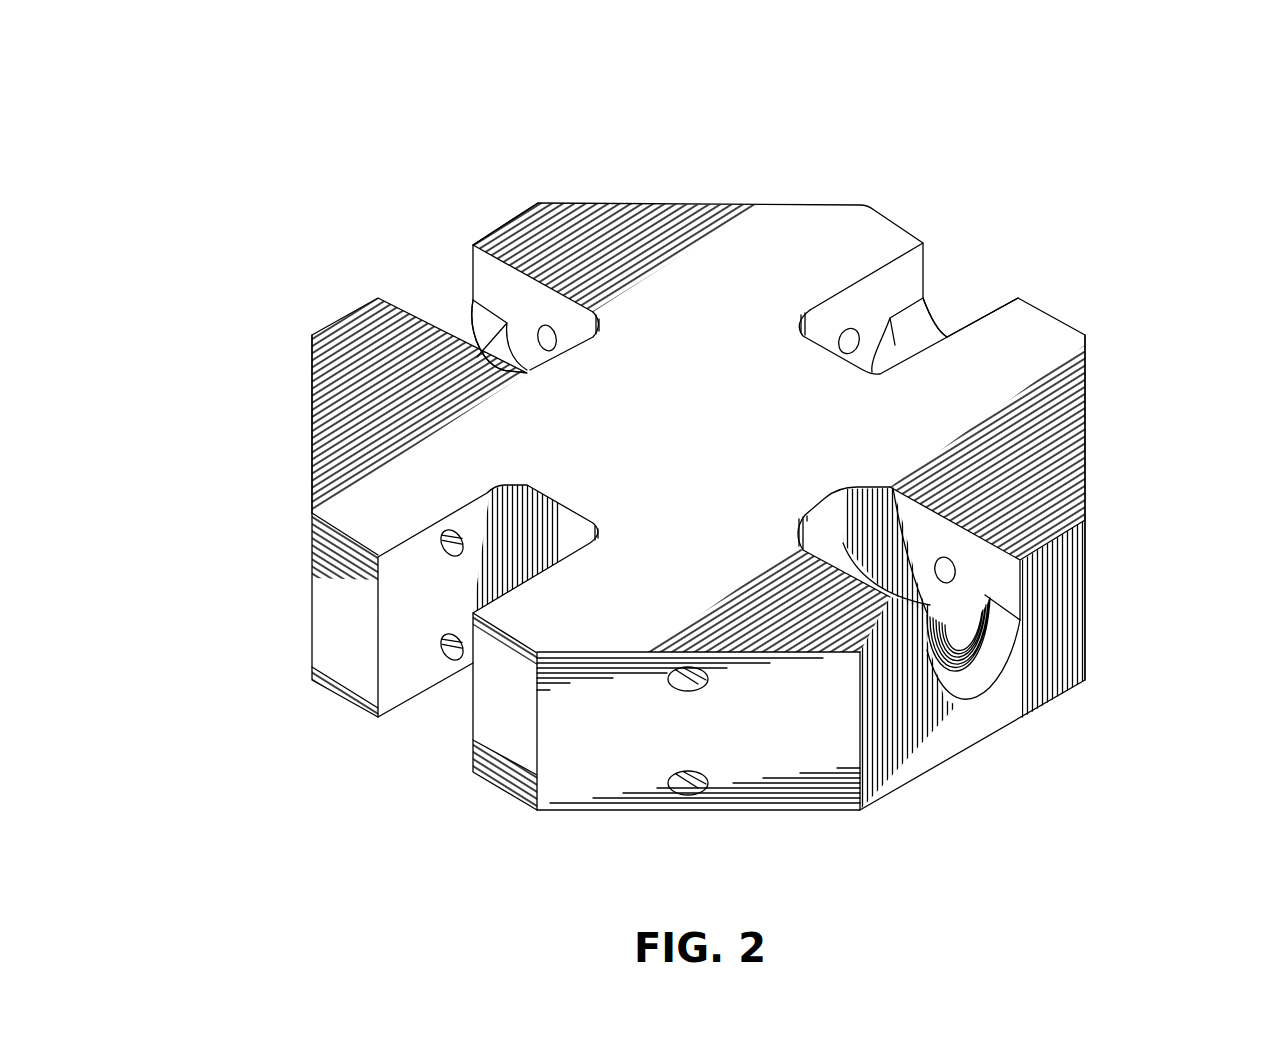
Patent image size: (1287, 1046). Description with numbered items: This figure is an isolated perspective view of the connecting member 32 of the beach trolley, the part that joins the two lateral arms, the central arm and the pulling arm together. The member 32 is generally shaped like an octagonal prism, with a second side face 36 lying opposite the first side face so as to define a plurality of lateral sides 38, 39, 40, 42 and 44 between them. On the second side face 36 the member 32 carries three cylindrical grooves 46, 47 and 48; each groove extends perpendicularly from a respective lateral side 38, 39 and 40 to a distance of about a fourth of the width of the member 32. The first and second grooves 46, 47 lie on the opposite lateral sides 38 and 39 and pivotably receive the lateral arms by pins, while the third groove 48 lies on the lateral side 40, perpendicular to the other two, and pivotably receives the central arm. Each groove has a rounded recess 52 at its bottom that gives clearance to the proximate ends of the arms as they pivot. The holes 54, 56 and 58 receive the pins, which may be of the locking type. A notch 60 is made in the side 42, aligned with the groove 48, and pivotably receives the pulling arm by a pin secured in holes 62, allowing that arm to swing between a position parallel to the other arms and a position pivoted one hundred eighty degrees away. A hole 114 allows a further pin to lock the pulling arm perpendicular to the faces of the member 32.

The connecting member 32 is at (408, 172).
The second side face 36 is at (368, 393).
The lateral side 38 is at (903, 733).
The lateral side 39 is at (503, 228).
The lateral side 40 is at (1055, 300).
The side 42 is at (500, 758).
The lateral side 44 is at (688, 205).
The cylindrical groove 46 is at (880, 560).
The cylindrical groove 47 is at (440, 300).
The third groove 48 is at (935, 292).
The rounded recess 52 is at (503, 345).
The hole 54 is at (945, 570).
The hole 56 is at (849, 340).
The hole 58 is at (548, 340).
The notch 60 is at (438, 610).
The holes 62 is at (688, 783).
The hole 114 is at (450, 543).